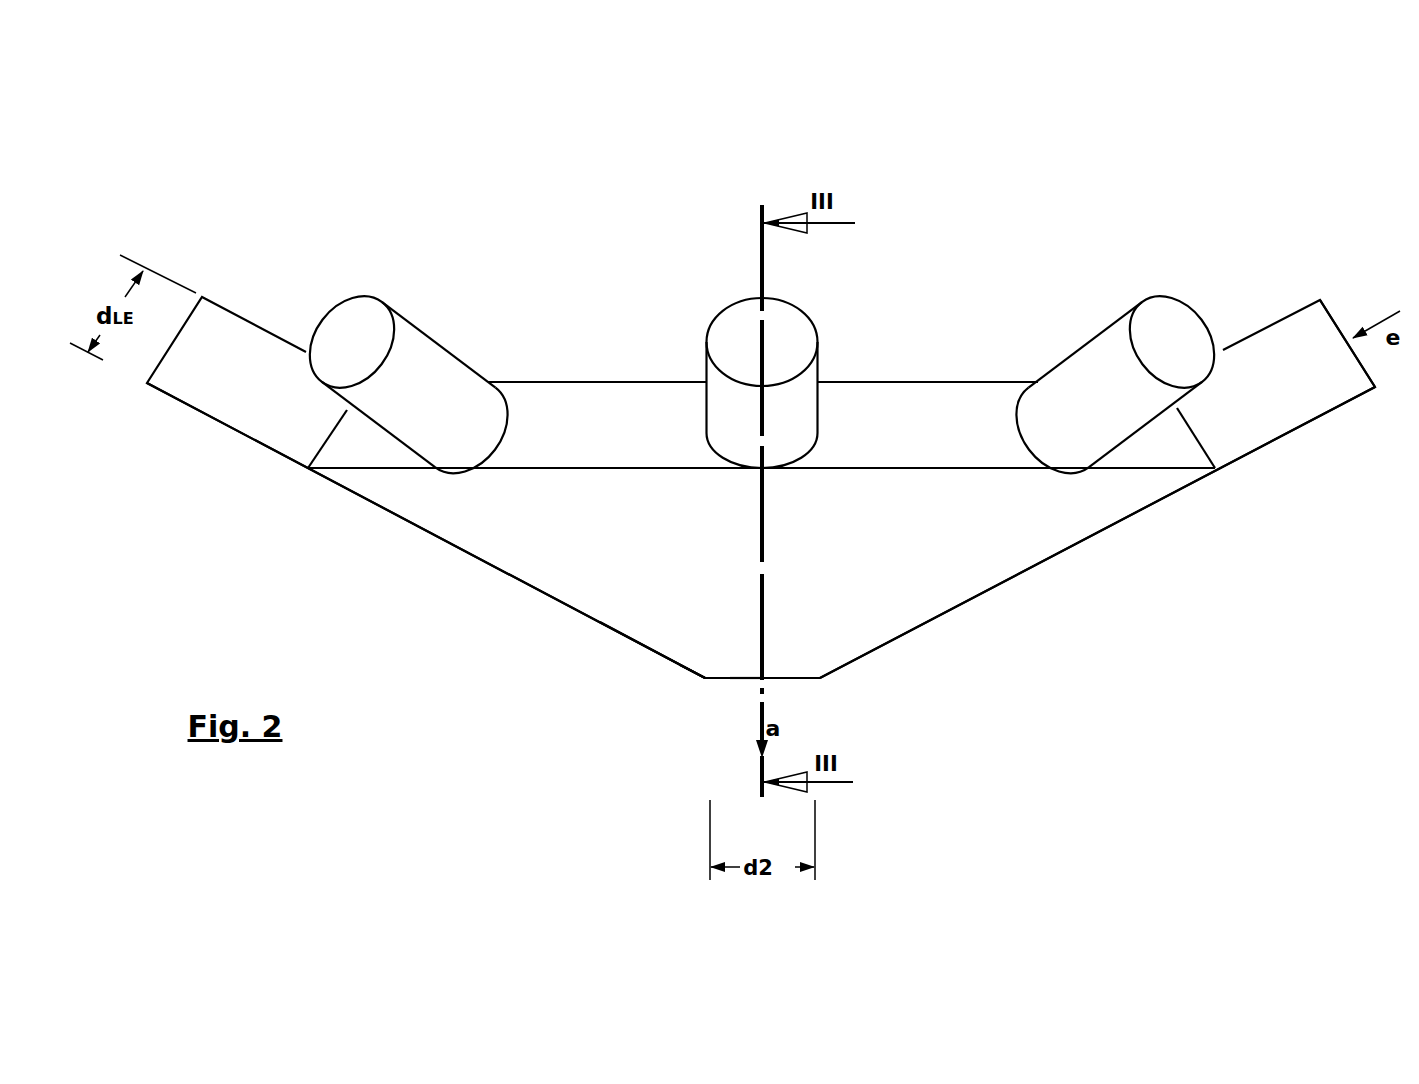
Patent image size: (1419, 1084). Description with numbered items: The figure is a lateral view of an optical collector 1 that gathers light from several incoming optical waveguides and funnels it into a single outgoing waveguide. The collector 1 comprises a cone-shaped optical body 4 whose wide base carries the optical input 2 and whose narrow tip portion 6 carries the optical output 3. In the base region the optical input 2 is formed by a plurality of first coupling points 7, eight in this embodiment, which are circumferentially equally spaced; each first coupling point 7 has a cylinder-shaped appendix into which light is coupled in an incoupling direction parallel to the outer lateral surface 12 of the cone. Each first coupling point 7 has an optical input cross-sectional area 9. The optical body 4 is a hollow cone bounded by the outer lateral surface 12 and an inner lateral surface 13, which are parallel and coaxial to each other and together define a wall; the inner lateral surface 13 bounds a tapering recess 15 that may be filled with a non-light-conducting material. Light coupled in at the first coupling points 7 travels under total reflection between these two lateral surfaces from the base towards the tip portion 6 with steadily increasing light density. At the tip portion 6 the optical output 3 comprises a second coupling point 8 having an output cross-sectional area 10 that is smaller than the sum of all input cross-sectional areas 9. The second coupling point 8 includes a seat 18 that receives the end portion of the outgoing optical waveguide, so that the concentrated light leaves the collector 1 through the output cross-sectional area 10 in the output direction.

The optical collector 1 is at (175, 172).
The optical input 2 is at (1303, 447).
The optical output 3 is at (753, 692).
The cone-shaped optical body 4 is at (527, 565).
The tip portion 6 is at (660, 662).
The first coupling points 7 is at (229, 307).
The second coupling point 8 is at (702, 680).
The optical input cross-sectional area 9 is at (1355, 316).
The output cross-sectional area 10 is at (783, 679).
The outer lateral surface 12 is at (761, 530).
The inner lateral surface 13 is at (761, 438).
The recess 15 is at (848, 376).
The seat 18 is at (745, 682).